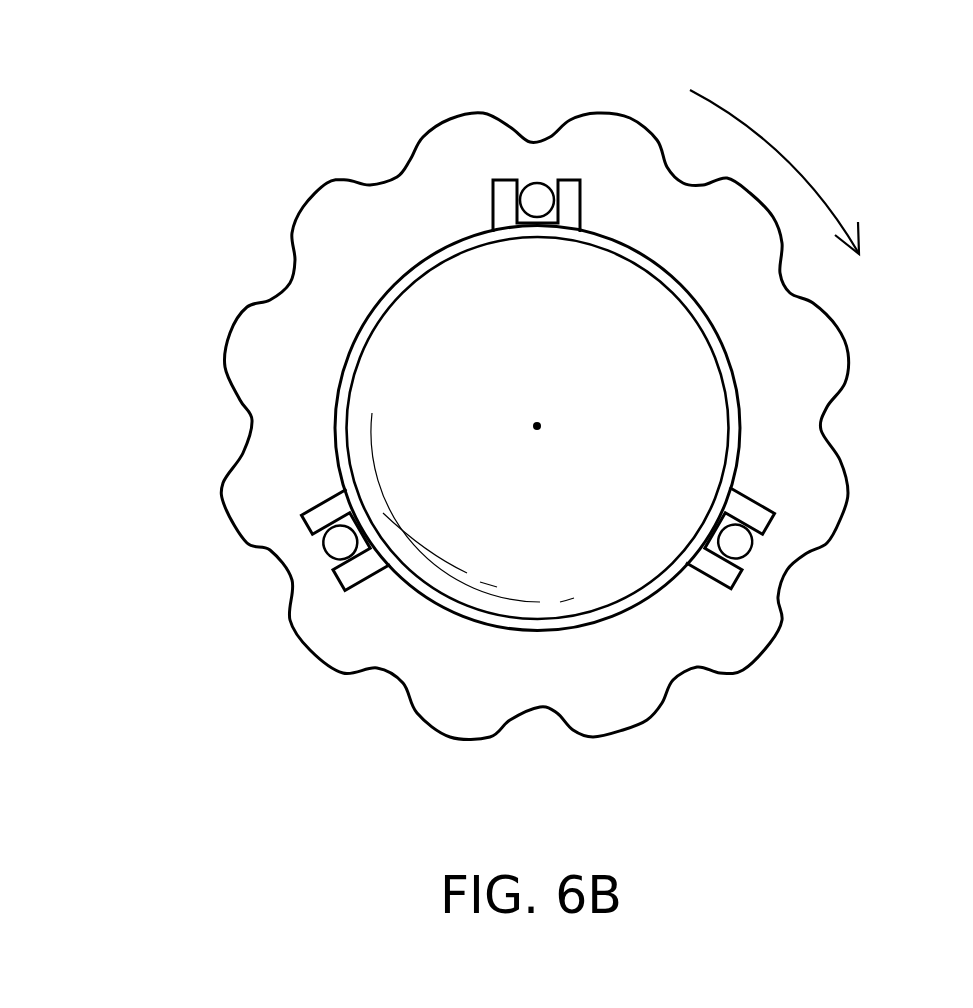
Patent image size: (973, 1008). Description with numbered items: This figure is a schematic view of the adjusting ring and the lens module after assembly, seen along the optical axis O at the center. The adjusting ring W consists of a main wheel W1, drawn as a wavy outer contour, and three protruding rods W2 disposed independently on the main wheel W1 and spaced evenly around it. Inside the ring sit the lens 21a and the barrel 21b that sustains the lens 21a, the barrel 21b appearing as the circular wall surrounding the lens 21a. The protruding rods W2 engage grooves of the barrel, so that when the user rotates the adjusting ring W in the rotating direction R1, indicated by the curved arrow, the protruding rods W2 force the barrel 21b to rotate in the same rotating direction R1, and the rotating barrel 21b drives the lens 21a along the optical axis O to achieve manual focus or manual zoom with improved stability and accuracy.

The main wheel W1 is at (628, 148).
The protruding rods W2 is at (537, 190).
The adjusting ring W is at (633, 46).
The lens 21a is at (668, 348).
The barrel 21b is at (735, 433).
The rotating direction R1 is at (774, 172).
The optical axis O is at (551, 413).